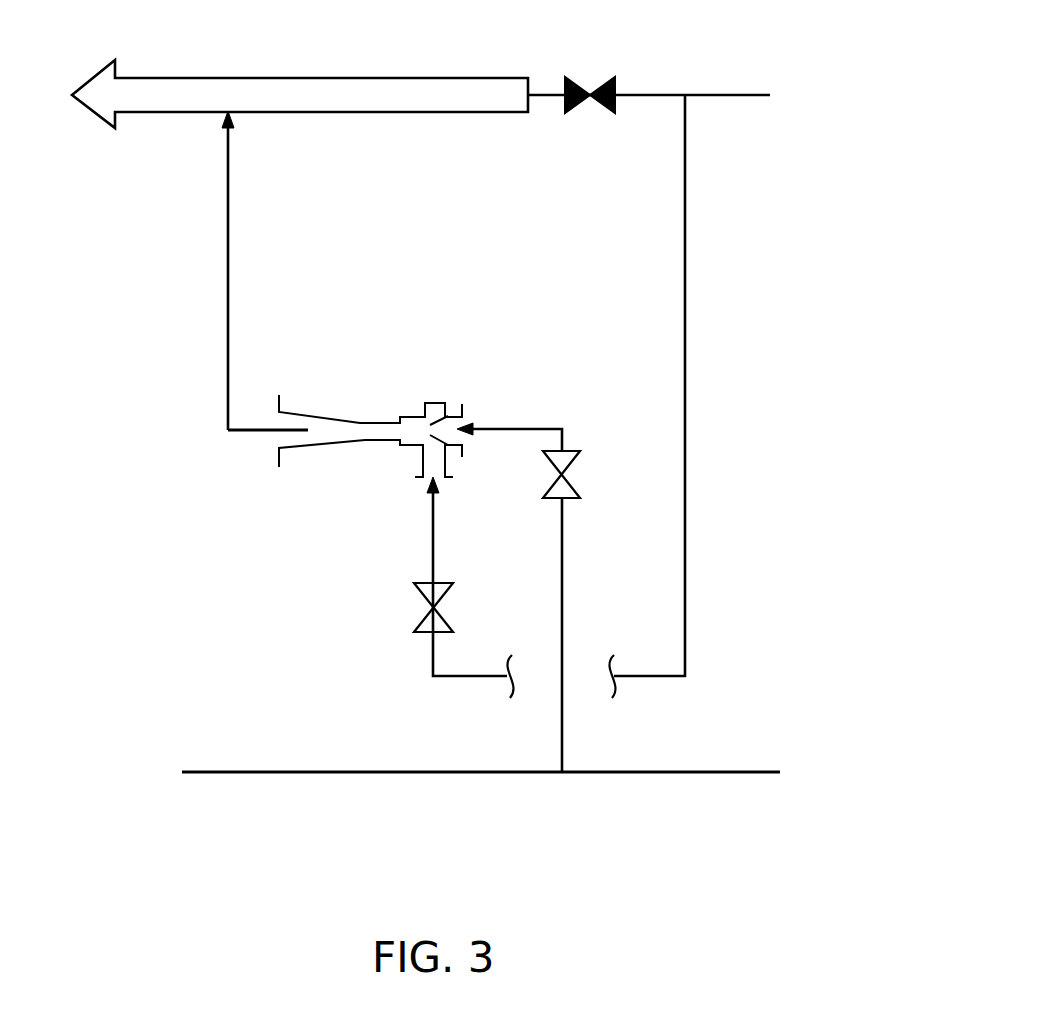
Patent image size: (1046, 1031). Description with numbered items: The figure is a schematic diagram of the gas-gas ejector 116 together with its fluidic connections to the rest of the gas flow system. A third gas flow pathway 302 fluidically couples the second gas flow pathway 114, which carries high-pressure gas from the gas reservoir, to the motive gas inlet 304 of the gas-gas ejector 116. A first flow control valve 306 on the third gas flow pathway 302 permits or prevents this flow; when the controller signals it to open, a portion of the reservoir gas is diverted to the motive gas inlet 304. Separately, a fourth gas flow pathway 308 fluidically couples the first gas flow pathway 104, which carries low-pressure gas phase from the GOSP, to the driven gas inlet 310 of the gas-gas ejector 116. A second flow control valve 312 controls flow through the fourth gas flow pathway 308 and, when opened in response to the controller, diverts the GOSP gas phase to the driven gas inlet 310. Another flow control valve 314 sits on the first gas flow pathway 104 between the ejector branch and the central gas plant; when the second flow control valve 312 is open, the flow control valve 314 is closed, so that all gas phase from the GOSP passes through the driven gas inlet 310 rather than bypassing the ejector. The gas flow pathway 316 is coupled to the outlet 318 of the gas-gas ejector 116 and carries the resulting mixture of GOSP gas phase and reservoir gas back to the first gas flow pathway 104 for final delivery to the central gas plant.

The first gas flow pathway 104 is at (150, 78).
The second gas flow pathway 114 is at (750, 772).
The gas-gas ejector 116 is at (212, 450).
The third gas flow pathway 302 is at (564, 734).
The motive gas inlet 304 is at (462, 423).
The first flow control valve 306 is at (568, 481).
The fourth gas flow pathway 308 is at (686, 359).
The driven gas inlet 310 is at (429, 478).
The second flow control valve 312 is at (425, 590).
The flow control valve 314 is at (608, 80).
The gas flow pathway 316 is at (228, 225).
The outlet 318 is at (285, 422).